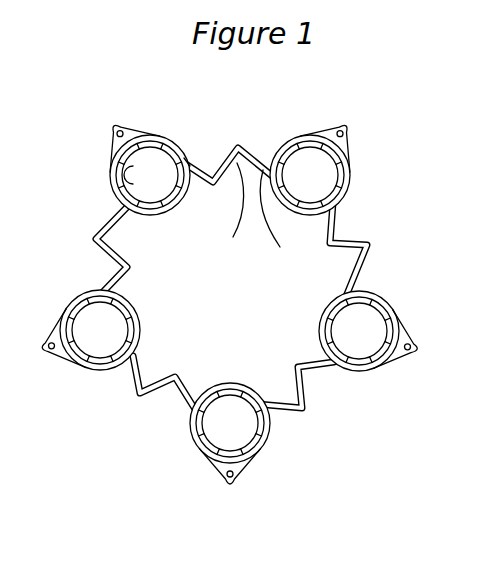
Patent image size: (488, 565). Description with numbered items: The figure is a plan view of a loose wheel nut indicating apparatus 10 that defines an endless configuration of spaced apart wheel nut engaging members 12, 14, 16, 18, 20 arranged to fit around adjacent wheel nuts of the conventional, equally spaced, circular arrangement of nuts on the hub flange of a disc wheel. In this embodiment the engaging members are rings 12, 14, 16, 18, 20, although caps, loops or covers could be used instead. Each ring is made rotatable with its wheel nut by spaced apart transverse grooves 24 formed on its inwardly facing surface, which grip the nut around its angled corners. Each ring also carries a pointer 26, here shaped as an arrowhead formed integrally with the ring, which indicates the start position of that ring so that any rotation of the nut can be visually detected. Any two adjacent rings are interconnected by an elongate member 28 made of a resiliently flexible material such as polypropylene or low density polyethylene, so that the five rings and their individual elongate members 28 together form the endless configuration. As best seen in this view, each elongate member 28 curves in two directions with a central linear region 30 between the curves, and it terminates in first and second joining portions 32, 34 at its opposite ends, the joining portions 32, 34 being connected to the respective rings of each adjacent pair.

The loose wheel nut indicating apparatus 10 is at (402, 77).
The wheel nut engaging member 12 is at (170, 140).
The wheel nut engaging member 14 is at (352, 180).
The wheel nut engaging member 16 is at (373, 372).
The wheel nut engaging member 18 is at (196, 444).
The wheel nut engaging member 20 is at (75, 298).
The transverse grooves 24 is at (113, 180).
The pointer 26 is at (113, 130).
The elongate member 28 is at (243, 148).
The central linear region 30 is at (237, 215).
The first joining portion 32 is at (190, 158).
The second joining portion 34 is at (285, 221).